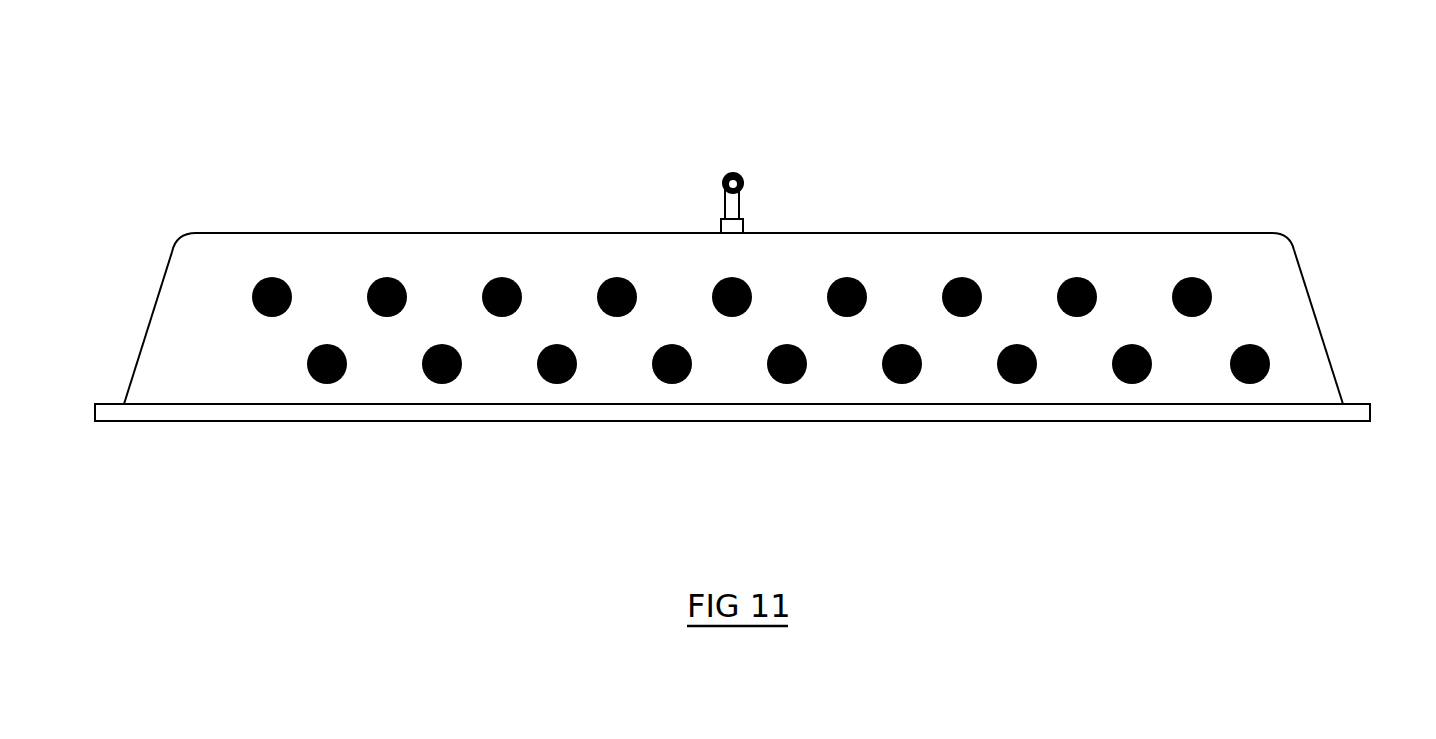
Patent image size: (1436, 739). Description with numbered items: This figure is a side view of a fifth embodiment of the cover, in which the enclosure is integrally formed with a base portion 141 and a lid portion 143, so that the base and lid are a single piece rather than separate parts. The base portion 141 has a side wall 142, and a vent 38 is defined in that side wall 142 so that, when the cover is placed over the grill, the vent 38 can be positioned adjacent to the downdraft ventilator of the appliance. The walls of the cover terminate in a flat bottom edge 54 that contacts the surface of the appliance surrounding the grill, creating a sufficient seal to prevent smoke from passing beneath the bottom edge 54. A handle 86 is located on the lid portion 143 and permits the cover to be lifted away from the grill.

The vent 38 is at (243, 342).
The flat bottom edge 54 is at (623, 422).
The handle 86 is at (735, 174).
The base portion 141 is at (1295, 322).
The side wall 142 is at (1143, 265).
The lid portion 143 is at (945, 232).